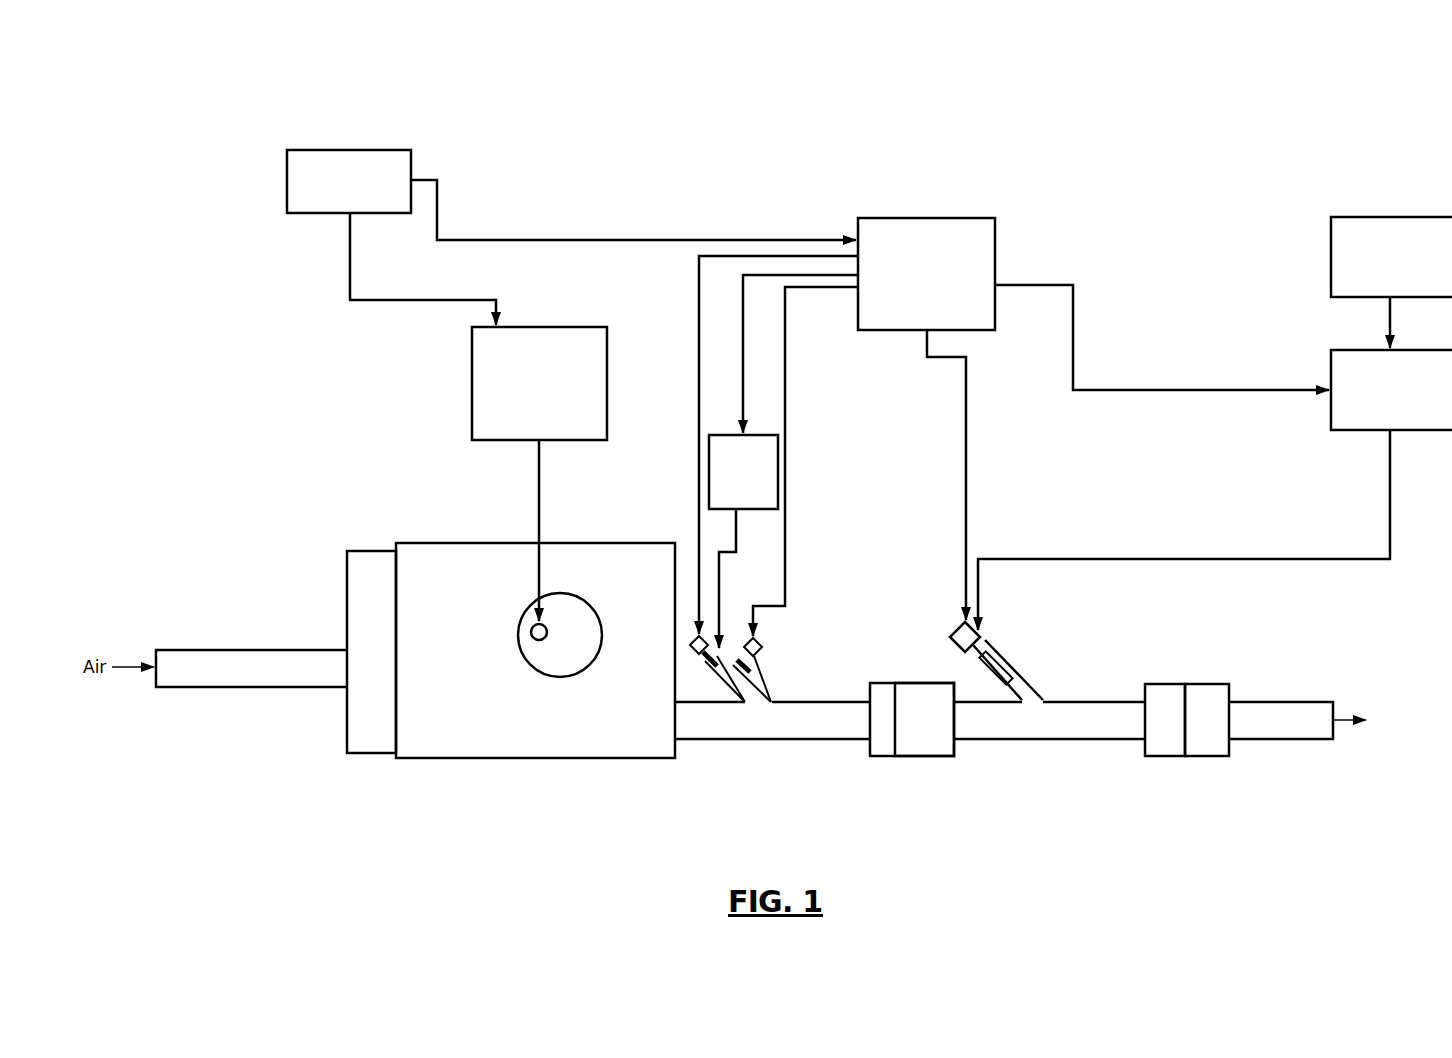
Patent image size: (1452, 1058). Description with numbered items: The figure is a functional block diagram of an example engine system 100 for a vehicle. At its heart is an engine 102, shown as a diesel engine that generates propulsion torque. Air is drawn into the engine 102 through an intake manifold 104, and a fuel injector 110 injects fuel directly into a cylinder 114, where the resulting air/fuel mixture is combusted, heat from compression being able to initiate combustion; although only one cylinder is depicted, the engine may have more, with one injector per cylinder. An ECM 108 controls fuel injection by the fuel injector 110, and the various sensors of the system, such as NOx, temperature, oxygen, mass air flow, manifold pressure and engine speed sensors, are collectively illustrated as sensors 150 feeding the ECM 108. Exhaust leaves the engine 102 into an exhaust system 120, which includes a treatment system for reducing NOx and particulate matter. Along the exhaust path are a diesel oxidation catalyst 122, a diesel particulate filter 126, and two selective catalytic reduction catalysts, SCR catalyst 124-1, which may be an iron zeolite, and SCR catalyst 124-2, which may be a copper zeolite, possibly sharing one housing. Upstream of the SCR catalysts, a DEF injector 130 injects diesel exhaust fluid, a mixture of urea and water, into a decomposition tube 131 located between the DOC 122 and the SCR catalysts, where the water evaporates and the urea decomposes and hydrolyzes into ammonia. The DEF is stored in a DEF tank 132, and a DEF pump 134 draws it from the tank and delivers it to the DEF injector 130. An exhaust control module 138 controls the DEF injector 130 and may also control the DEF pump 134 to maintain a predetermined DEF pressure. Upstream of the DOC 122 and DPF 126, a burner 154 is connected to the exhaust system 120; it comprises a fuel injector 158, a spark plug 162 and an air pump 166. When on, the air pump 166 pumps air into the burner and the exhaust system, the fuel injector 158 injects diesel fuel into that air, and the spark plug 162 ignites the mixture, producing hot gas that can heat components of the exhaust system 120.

The engine system 100 is at (266, 58).
The engine 102 is at (462, 543).
The intake manifold 104 is at (372, 551).
The ECM 108 is at (540, 327).
The fuel injector 110 is at (531, 628).
The cylinder 114 is at (563, 677).
The exhaust system 120 is at (1167, 862).
The diesel oxidation catalyst (DOC) 122 is at (880, 756).
The SCR catalyst 124-1 is at (1163, 756).
The SCR catalyst 124-2 is at (1212, 756).
The diesel particulate filter (DPF) 126 is at (928, 683).
The DEF injector 130 is at (952, 632).
The decomposition tube 131 is at (1030, 668).
The DEF tank 132 is at (1385, 217).
The DEF pump 134 is at (1331, 368).
The exhaust control module 138 is at (946, 218).
The sensors 150 is at (352, 150).
The burner 154 is at (810, 578).
The fuel injector 158 is at (701, 656).
The spark plug 162 is at (741, 664).
The air pump 166 is at (768, 435).